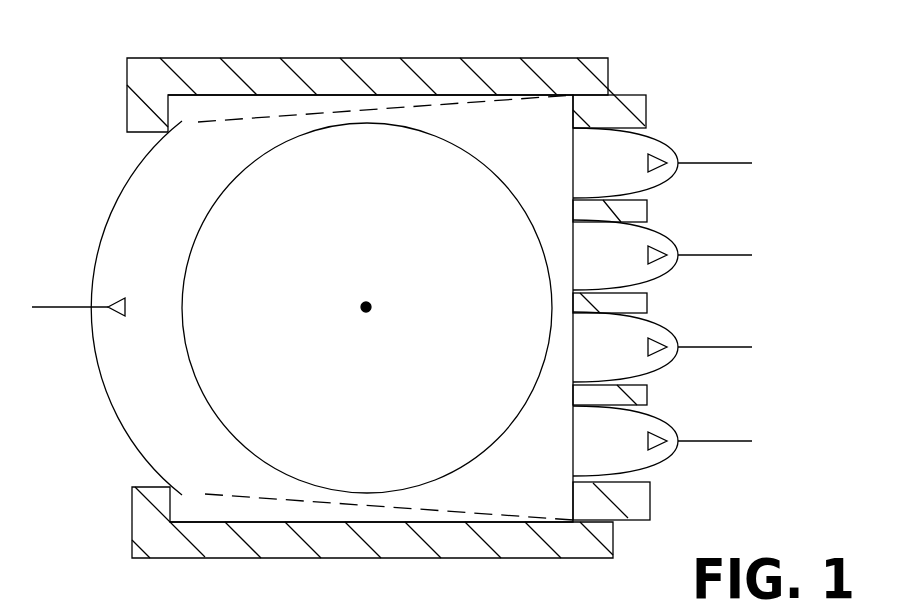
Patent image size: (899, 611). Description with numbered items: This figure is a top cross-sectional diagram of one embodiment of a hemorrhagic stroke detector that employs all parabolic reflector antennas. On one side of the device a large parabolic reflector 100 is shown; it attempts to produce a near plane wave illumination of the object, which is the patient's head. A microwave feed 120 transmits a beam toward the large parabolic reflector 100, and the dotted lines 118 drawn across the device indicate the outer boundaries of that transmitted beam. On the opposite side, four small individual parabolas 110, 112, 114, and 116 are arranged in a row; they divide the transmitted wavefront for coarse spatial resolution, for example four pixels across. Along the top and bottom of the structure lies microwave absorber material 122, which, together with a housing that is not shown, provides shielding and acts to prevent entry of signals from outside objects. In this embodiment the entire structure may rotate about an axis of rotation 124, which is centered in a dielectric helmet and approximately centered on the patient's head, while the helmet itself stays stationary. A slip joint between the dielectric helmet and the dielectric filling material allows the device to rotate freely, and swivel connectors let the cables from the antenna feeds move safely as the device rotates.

The large parabolic reflector 100 is at (100, 390).
The small individual parabola 110 is at (668, 141).
The small individual parabola 112 is at (667, 236).
The small individual parabola 114 is at (667, 328).
The small individual parabola 116 is at (667, 424).
The dotted lines 118 is at (279, 118).
The microwave feed 120 is at (116, 298).
The microwave absorber material 122 is at (490, 58).
The axis of rotation 124 is at (367, 300).